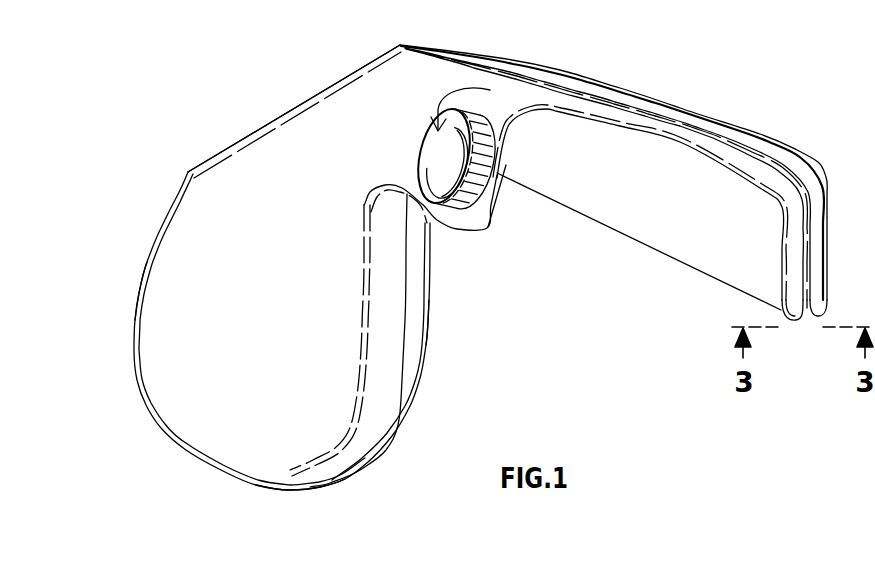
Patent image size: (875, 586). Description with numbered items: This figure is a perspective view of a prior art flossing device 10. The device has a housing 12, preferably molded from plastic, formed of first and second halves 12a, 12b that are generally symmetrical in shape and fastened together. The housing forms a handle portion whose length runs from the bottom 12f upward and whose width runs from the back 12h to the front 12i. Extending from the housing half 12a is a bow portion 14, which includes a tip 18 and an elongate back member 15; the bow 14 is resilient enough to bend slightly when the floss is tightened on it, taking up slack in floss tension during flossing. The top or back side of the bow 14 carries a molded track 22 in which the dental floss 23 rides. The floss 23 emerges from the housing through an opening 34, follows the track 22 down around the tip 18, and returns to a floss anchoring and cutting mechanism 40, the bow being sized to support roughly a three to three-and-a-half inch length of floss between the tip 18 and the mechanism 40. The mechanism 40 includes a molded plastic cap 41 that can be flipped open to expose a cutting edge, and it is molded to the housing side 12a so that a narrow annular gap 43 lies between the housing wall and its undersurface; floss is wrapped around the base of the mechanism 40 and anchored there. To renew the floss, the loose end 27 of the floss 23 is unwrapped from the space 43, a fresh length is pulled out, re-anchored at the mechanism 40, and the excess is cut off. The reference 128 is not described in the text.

The flossing device 10 is at (165, 345).
The housing 12 is at (178, 424).
The first housing half 12a is at (387, 287).
The second housing half 12b is at (433, 316).
The bottom 12f is at (332, 485).
The back 12h is at (138, 293).
The front 12i is at (407, 364).
The bow portion 14 is at (798, 247).
The elongate back member 15 is at (627, 118).
The tip 18 is at (794, 313).
The molded track 22 is at (707, 127).
The dental floss 23 is at (673, 261).
The loose end 27 is at (488, 228).
The opening 34 is at (413, 47).
The floss anchoring and cutting mechanism 40 is at (470, 107).
The molded plastic cap 41 is at (424, 152).
The annular gap 43 is at (492, 120).
The upper slanted wall 128 is at (267, 122).